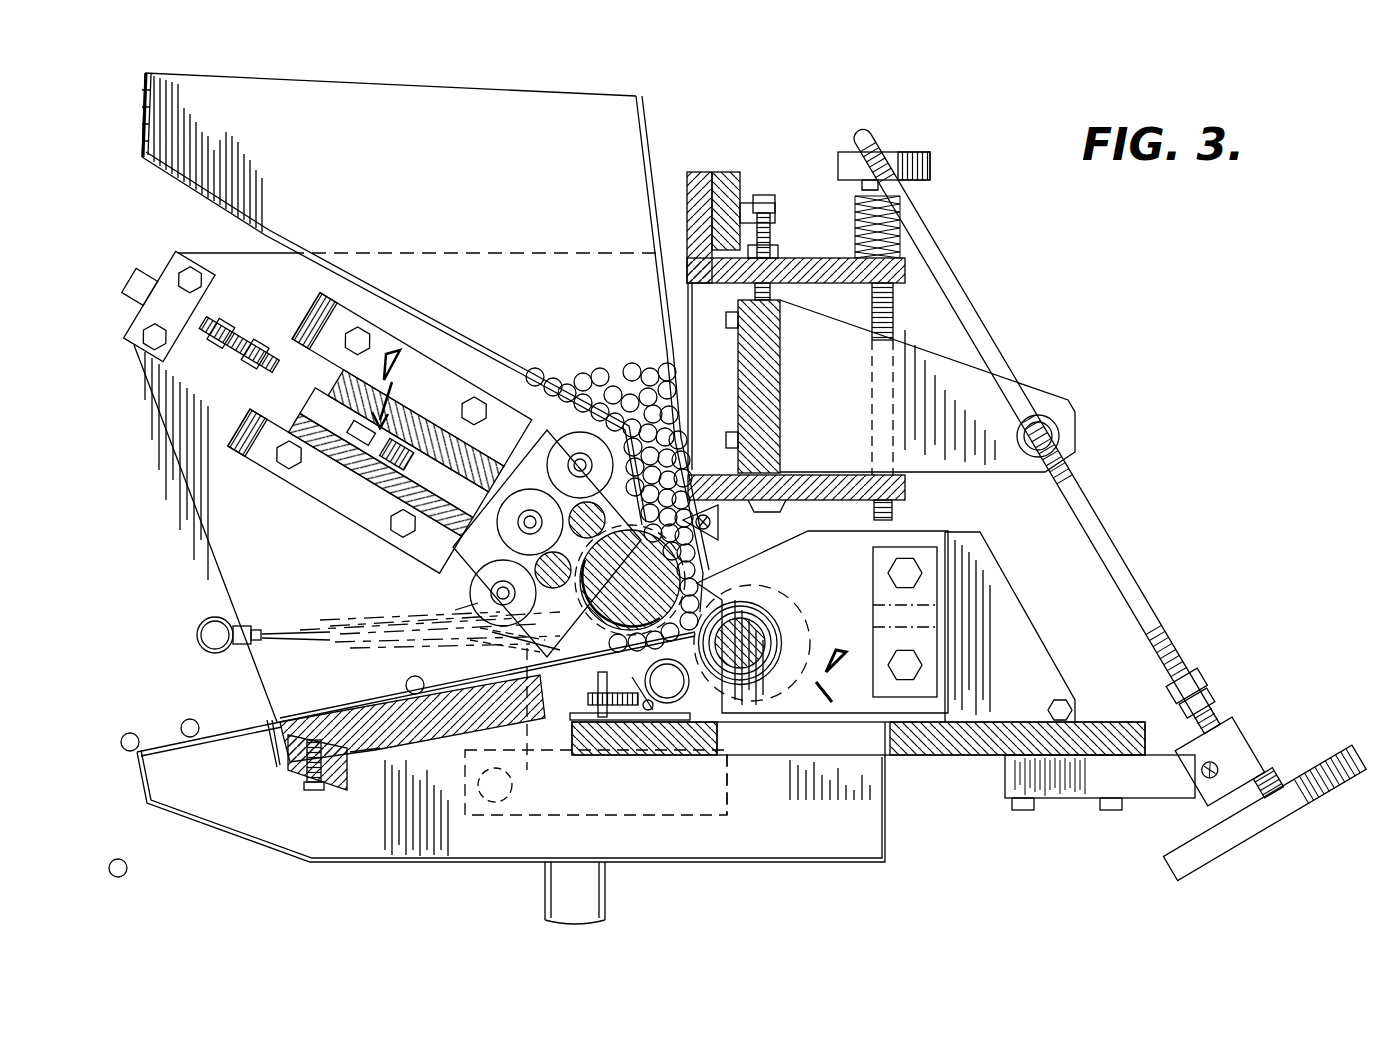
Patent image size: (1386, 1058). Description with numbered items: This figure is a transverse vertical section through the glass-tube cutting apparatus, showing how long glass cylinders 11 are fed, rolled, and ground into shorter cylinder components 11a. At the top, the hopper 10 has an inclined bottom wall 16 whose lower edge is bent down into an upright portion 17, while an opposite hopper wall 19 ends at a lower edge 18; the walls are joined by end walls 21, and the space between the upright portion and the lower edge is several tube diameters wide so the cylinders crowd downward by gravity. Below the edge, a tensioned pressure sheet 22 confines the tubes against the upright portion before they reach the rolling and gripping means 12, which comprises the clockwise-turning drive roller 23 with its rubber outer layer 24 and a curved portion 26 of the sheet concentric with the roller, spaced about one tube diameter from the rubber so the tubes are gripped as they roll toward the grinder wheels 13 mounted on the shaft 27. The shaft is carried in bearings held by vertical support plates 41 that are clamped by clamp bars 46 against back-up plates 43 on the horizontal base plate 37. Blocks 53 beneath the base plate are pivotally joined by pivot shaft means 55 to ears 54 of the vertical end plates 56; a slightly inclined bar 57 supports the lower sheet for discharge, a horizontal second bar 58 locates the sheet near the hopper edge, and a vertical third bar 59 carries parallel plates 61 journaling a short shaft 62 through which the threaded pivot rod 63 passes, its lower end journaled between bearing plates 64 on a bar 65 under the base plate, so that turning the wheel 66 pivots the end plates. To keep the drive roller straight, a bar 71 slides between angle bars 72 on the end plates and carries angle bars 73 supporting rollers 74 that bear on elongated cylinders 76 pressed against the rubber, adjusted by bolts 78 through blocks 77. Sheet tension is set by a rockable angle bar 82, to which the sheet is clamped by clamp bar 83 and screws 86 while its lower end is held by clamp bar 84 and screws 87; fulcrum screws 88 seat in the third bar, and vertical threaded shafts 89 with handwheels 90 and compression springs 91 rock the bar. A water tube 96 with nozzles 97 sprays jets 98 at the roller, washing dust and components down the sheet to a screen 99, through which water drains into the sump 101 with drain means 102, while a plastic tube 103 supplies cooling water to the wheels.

The hopper (supply means) 10 is at (441, 71).
The glass cylinders 11 is at (596, 374).
The separated cylinder components 11a is at (424, 682).
The rolling and gripping means 12 is at (708, 562).
The grinder wheels 13 is at (545, 440).
The inclined bottom wall 16 is at (262, 240).
The upright portion 17 is at (598, 522).
The lower edge of hopper wall 18 is at (740, 468).
The hopper wall 19 is at (645, 122).
The end walls 21 is at (517, 92).
The pressure sheet 22 is at (692, 298).
The drive roller 23 is at (600, 592).
The rubber outer layer 24 is at (588, 668).
The curved portion of pressure sheet 26 is at (735, 572).
The shaft 27 is at (768, 630).
The base plate 37 is at (618, 758).
The vertical support plates 41 is at (853, 540).
The back-up plates 43 is at (1025, 618).
The clamp bars 46 is at (870, 570).
The downwardly-extending blocks 53 is at (734, 790).
The ears 54 is at (470, 818).
The pivot shaft means 55 is at (514, 782).
The vertical end plates 56 is at (150, 404).
The bar 57 is at (368, 760).
The second bar 58 is at (905, 490).
The third bar 59 is at (782, 390).
The parallel plates 61 is at (1000, 468).
The short horizontal shaft 62 is at (1060, 430).
The pivot rod 63 is at (990, 316).
The bearing plates 64 is at (1240, 728).
The bar 65 is at (1076, 805).
The wheel 66 is at (1310, 806).
The bar 71 is at (455, 404).
The angle bars 72 is at (335, 518).
The angle bars 73 is at (394, 453).
The rollers 74 is at (462, 528).
The elongated cylinders 76 is at (318, 302).
The blocks 77 is at (120, 328).
The bolts 78 is at (125, 282).
The rockable angle bar 82 is at (810, 262).
The clamp bar 83 is at (730, 178).
The clamp bar 84 is at (290, 775).
The screws 86 is at (735, 200).
The screws 87 is at (312, 790).
The fulcrum screws 88 is at (775, 205).
The vertical threaded shafts 89 is at (895, 330).
The handwheels 90 is at (908, 152).
The helical compression springs 91 is at (858, 238).
The water tube 96 is at (205, 626).
The nozzles 97 is at (240, 652).
The water jets 98 is at (365, 626).
The screen 99 is at (235, 745).
The sump 101 is at (490, 870).
The drain means 102 is at (612, 898).
The plastic tube 103 is at (695, 758).